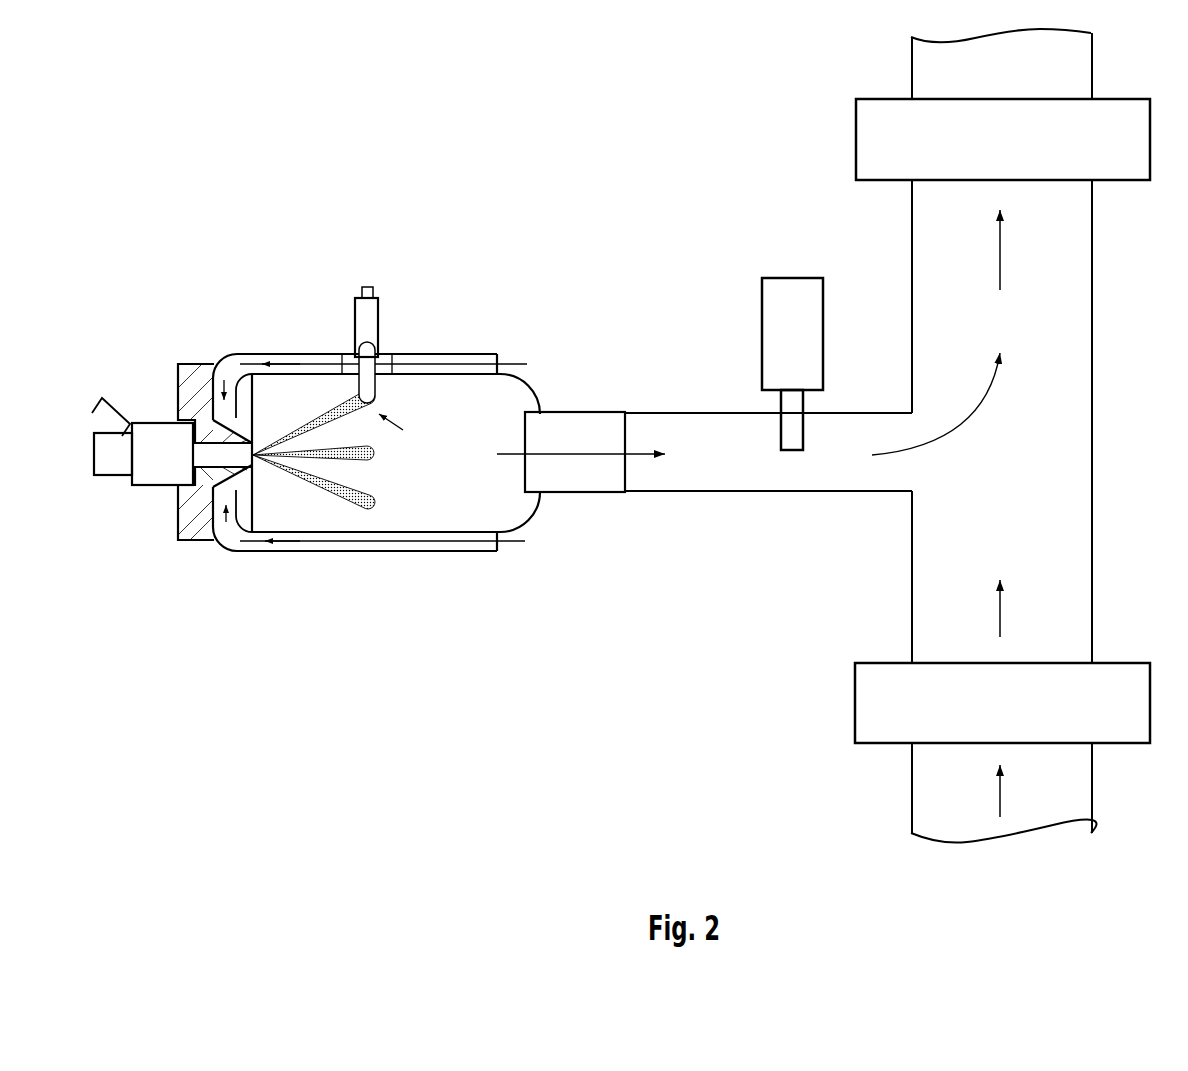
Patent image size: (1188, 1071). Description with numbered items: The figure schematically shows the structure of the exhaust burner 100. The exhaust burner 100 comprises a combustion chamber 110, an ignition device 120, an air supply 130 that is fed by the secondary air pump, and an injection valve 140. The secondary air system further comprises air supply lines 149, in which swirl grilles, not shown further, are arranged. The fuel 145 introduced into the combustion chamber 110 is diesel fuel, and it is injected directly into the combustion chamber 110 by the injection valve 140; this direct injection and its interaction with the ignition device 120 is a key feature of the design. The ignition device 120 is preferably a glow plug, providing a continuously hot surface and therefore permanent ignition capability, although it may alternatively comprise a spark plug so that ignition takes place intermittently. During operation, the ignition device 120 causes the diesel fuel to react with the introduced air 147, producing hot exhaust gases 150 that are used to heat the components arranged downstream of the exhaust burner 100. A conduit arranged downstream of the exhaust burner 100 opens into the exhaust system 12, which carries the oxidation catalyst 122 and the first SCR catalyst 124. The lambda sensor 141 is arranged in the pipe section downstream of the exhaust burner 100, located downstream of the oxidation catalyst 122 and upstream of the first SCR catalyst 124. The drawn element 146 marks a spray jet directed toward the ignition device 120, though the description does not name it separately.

The exhaust system 12 is at (912, 587).
The exhaust burner 100 is at (170, 320).
The combustion chamber 110 is at (487, 431).
The ignition device 120 is at (367, 317).
The oxidation catalyst 122 is at (1002, 703).
The first SCR catalyst 124 is at (1003, 139).
The air supply 130 is at (527, 363).
The injection valve 140 is at (155, 482).
The lambda sensor 141 is at (785, 278).
The fuel 145 is at (330, 497).
The spray jet impinging on sensor 146 is at (403, 430).
The introduced air 147 is at (234, 354).
The air supply lines 149 is at (437, 354).
The hot exhaust gases 150 is at (637, 452).